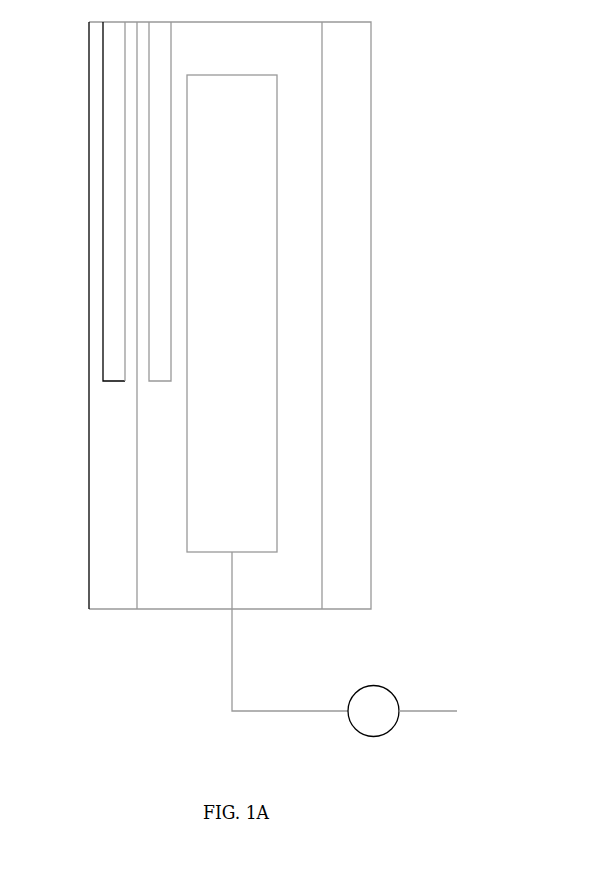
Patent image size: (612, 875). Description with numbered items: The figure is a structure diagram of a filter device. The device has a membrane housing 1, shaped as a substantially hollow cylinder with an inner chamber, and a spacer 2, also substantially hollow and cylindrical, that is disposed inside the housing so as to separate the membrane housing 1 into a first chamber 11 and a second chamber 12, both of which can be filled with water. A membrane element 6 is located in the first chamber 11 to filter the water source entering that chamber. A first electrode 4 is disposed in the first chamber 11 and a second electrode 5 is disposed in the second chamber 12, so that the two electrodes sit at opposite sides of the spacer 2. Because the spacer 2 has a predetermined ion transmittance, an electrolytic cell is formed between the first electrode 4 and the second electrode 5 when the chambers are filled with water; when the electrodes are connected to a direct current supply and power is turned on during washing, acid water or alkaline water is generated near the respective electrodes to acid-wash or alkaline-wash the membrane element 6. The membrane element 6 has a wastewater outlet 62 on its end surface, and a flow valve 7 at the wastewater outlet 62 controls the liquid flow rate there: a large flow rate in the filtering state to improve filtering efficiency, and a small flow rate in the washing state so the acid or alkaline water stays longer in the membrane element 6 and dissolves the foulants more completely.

The membrane housing 1 is at (373, 510).
The spacer 2 is at (58, 533).
The first electrode 4 is at (153, 145).
The second electrode 5 is at (112, 282).
The membrane element 6 is at (263, 134).
The flow valve 7 is at (388, 720).
The first chamber 11 is at (308, 581).
The second chamber 12 is at (362, 571).
The wastewater outlet 62 is at (232, 657).